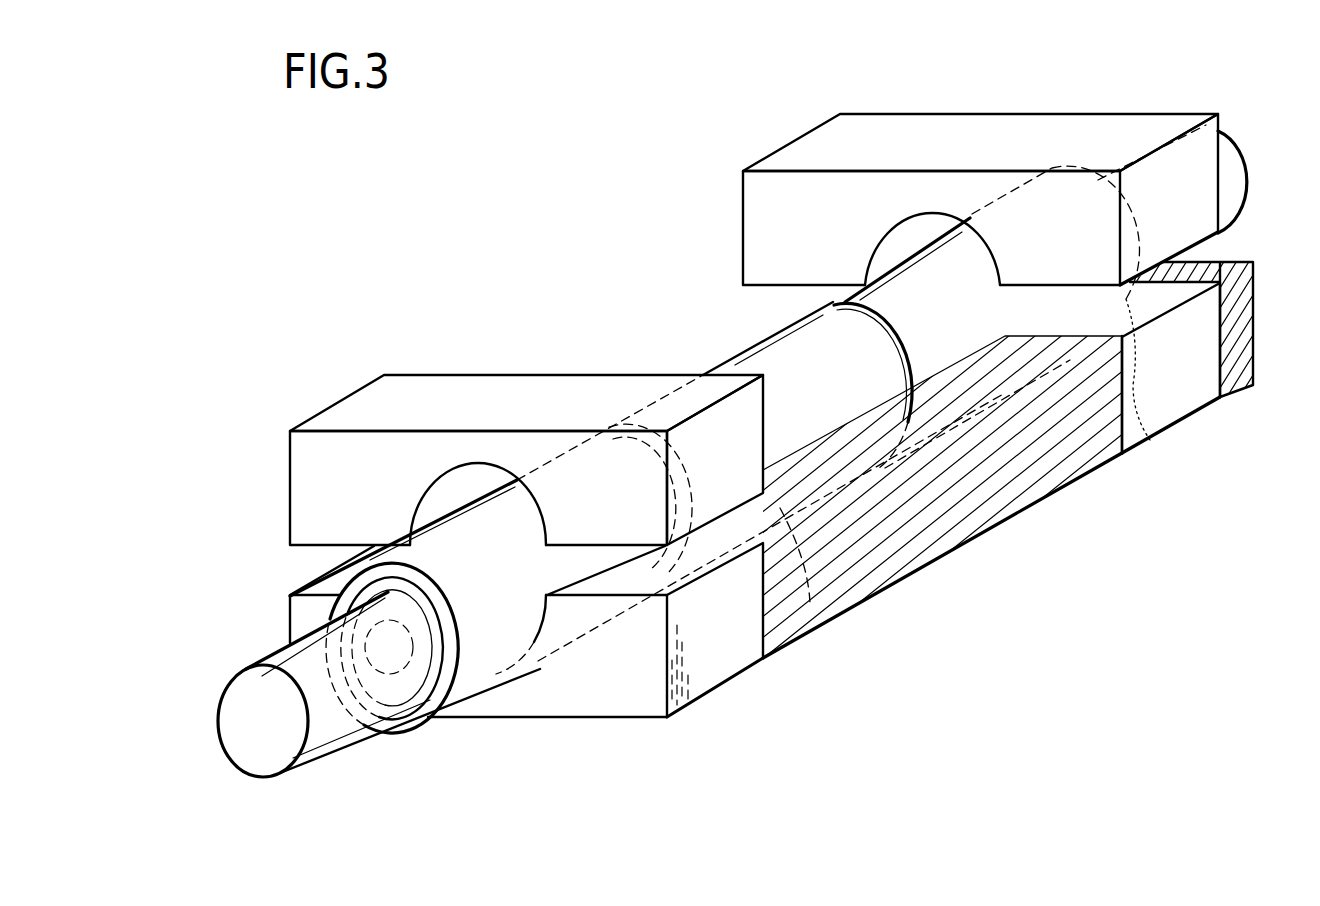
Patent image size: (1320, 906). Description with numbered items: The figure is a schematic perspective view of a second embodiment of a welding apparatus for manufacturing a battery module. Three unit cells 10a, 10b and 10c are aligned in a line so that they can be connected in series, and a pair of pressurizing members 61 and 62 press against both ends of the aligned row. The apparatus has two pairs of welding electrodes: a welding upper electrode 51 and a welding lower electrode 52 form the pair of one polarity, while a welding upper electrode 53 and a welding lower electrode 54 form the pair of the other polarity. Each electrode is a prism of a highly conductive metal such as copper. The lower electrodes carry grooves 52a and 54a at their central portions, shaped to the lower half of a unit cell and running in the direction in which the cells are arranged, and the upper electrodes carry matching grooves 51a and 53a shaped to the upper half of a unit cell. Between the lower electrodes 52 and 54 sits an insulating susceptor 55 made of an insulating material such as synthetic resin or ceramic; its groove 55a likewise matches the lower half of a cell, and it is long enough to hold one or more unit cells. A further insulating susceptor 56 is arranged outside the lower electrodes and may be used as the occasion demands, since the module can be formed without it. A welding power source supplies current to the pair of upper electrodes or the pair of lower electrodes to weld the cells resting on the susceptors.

The unit cell 10a is at (485, 673).
The unit cell 10b is at (827, 393).
The unit cell 10c is at (963, 332).
The welding upper electrode 51 is at (440, 393).
The groove 51a is at (448, 500).
The welding lower electrode 52 is at (640, 706).
The groove 52a is at (540, 630).
The welding upper electrode 53 is at (896, 132).
The groove 53a is at (912, 227).
The welding lower electrode 54 is at (1205, 392).
The groove 54a is at (1150, 440).
The insulating susceptor 55 is at (962, 523).
The groove 55a is at (810, 603).
The insulating susceptor 56 is at (1237, 375).
The pressurizing member 61 is at (290, 663).
The pressurizing member 62 is at (1238, 200).